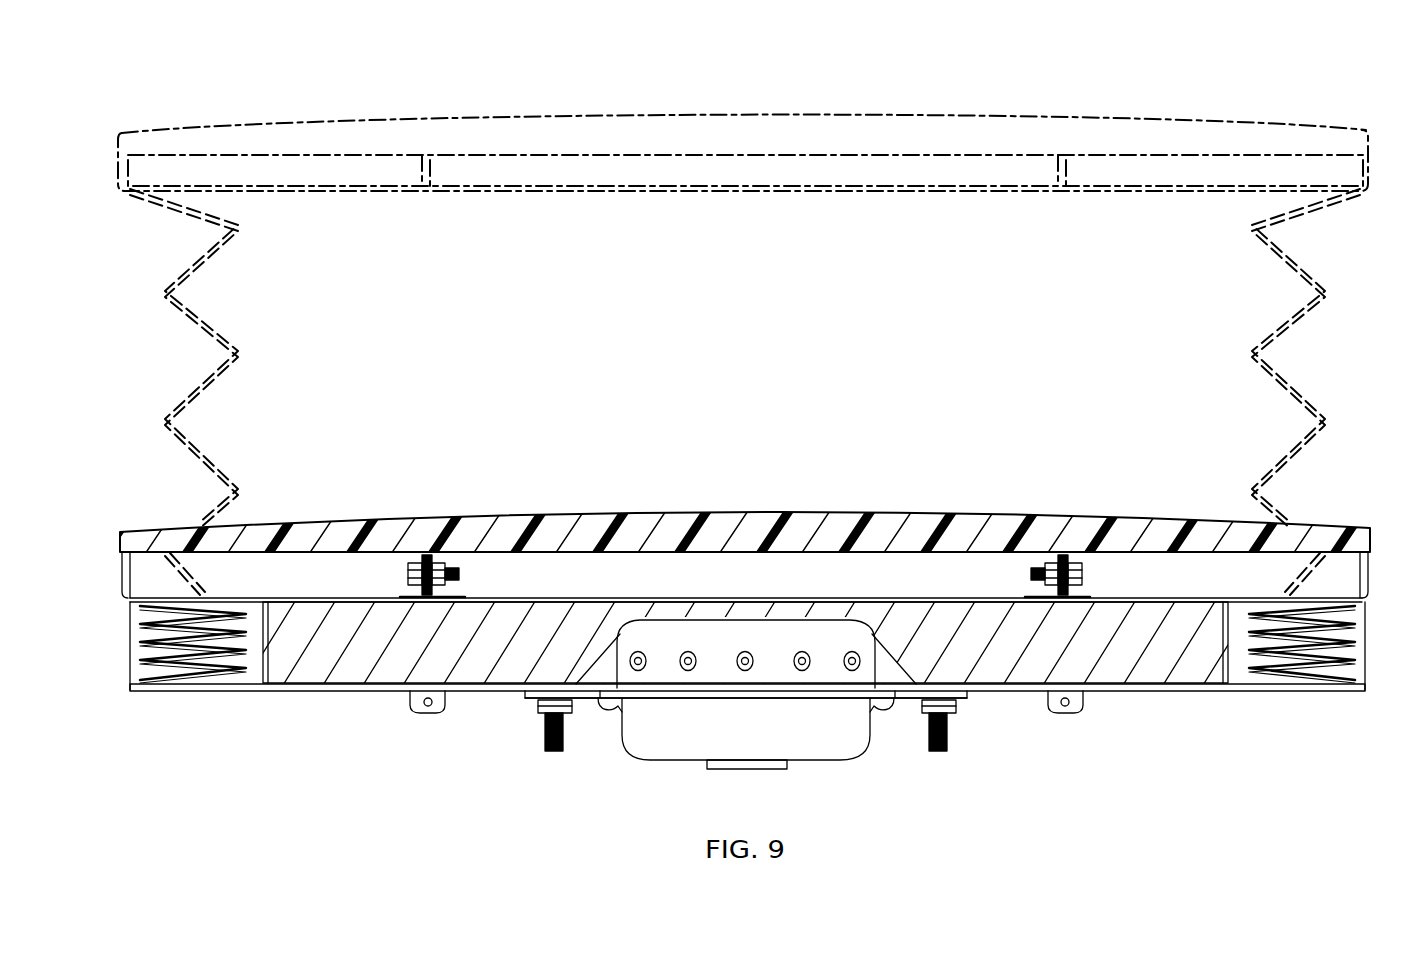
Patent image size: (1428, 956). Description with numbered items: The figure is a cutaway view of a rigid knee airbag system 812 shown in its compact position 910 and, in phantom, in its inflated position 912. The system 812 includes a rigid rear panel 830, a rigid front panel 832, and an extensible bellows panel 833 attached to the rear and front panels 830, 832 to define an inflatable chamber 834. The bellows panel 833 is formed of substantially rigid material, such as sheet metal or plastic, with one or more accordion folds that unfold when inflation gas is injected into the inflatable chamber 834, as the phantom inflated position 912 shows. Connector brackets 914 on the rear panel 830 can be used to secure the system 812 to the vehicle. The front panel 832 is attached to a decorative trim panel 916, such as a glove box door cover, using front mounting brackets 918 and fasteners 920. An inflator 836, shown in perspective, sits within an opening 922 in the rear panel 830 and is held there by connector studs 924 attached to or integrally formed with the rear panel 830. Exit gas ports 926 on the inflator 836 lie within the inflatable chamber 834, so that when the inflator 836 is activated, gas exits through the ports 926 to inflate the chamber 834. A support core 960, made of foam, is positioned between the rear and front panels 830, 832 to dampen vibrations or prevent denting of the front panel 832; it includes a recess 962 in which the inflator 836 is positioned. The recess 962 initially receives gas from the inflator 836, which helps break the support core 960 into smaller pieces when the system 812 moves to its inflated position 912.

The rigid airbag system 812 is at (872, 114).
The inflated position 912 is at (128, 112).
The decorative trim panel 916 is at (806, 525).
The front panel 832 is at (218, 597).
The compact position 910 is at (1378, 528).
The support core 960 is at (292, 667).
The rear panel 830 is at (332, 690).
The extensible bellows panel 833 is at (240, 683).
The front mounting bracket 918 is at (413, 596).
The fastener 920 is at (460, 574).
The connector bracket 914 is at (414, 713).
The recess 962 is at (595, 657).
The opening 922 is at (888, 700).
The exit gas port 926 is at (750, 664).
The inflator 836 is at (634, 750).
The inflatable chamber 834 is at (587, 700).
The connector stud 924 is at (555, 752).